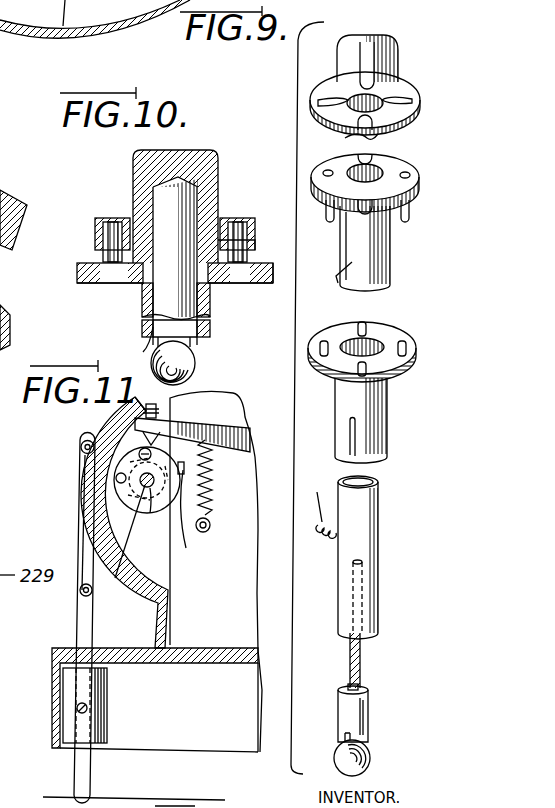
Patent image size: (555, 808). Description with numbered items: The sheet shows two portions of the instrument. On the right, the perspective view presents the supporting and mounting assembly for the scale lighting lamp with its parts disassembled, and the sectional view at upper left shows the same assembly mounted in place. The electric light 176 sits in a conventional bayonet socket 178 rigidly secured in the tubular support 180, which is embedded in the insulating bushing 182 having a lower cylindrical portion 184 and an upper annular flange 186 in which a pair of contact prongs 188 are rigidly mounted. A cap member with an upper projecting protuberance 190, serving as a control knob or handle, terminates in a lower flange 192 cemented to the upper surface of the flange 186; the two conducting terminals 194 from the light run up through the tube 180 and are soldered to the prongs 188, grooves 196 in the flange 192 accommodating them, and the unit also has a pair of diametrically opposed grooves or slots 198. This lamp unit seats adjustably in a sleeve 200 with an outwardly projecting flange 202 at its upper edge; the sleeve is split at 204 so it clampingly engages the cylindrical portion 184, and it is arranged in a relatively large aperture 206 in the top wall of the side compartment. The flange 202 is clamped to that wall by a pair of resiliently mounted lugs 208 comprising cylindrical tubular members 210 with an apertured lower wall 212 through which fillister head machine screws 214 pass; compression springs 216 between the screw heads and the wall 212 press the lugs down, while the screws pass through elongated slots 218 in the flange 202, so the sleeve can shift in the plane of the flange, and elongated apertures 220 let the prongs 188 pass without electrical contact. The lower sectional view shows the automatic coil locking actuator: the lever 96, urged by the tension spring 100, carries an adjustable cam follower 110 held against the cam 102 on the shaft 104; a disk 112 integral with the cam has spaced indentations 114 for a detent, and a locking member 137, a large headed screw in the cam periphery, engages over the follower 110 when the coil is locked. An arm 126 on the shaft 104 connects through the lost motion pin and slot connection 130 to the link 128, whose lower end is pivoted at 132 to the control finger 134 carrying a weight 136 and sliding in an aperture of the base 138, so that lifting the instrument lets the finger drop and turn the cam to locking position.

In FIG. 11, the lever 96 is at (248, 432).
In FIG. 11, the tension spring 100 is at (212, 490).
In FIG. 11, the cam 102 is at (153, 517).
In FIG. 11, the shaft 104 is at (124, 522).
In FIG. 11, the cam follower 110 is at (148, 432).
In FIG. 11, the disk 112 is at (125, 495).
In FIG. 11, the indentations 114 is at (118, 478).
In FIG. 11, the arm 126 is at (118, 433).
In FIG. 11, the link 128 is at (80, 530).
In FIG. 11, the lost motion pin and slot connection 130 is at (88, 462).
In FIG. 11, the pivot 132 is at (80, 590).
In FIG. 11, the control finger 134 is at (88, 772).
In FIG. 11, the weight 136 is at (100, 717).
In FIG. 11, the locking member 137 is at (202, 516).
In FIG. 11, the base 138 is at (198, 665).
In FIG. 9, the electric light 176 is at (366, 757).
In FIG. 10, the electric light 176 is at (192, 363).
In FIG. 9, the bayonet socket 178 is at (368, 707).
In FIG. 9, the tubular support 180 is at (370, 581).
In FIG. 10, the tubular support 180 is at (163, 297).
In FIG. 9, the insulating bushing 182 is at (394, 256).
In FIG. 10, the insulating bushing 182 is at (140, 338).
In FIG. 9, the lower cylindrical portion 184 is at (332, 284).
In FIG. 10, the lower cylindrical portion 184 is at (210, 311).
In FIG. 9, the upper annular flange 186 is at (390, 161).
In FIG. 10, the upper annular flange 186 is at (255, 244).
In FIG. 9, the contact prongs 188 is at (405, 222).
In FIG. 9, the protuberance 190 is at (380, 47).
In FIG. 10, the protuberance 190 is at (202, 152).
In FIG. 9, the lower flange 192 is at (402, 82).
In FIG. 10, the lower flange 192 is at (222, 218).
In FIG. 9, the conducting terminals 194 is at (398, 540).
In FIG. 9, the grooves 196 is at (402, 100).
In FIG. 9, the grooves or slots 198 is at (364, 42).
In FIG. 9, the sleeve 200 is at (387, 403).
In FIG. 10, the sleeve 200 is at (142, 295).
In FIG. 9, the flange 202 is at (393, 332).
In FIG. 10, the flange 202 is at (83, 262).
In FIG. 9, the split 204 is at (356, 435).
In FIG. 10, the aperture 206 is at (213, 290).
In FIG. 10, the lugs 208 is at (95, 227).
In FIG. 10, the cylindrical tubular members 210 is at (257, 233).
In FIG. 10, the lower wall 212 is at (87, 285).
In FIG. 10, the fillister head machine screws 214 is at (103, 253).
In FIG. 10, the compression springs 216 is at (100, 238).
In FIG. 9, the elongated slots 218 is at (362, 327).
In FIG. 9, the apertures 220 is at (403, 350).